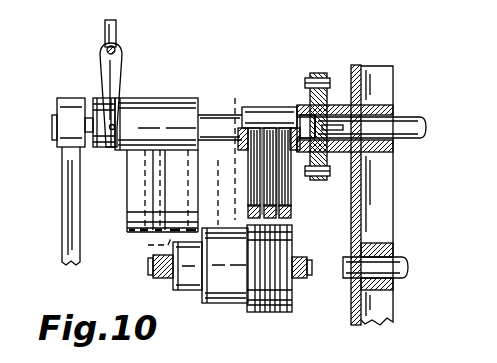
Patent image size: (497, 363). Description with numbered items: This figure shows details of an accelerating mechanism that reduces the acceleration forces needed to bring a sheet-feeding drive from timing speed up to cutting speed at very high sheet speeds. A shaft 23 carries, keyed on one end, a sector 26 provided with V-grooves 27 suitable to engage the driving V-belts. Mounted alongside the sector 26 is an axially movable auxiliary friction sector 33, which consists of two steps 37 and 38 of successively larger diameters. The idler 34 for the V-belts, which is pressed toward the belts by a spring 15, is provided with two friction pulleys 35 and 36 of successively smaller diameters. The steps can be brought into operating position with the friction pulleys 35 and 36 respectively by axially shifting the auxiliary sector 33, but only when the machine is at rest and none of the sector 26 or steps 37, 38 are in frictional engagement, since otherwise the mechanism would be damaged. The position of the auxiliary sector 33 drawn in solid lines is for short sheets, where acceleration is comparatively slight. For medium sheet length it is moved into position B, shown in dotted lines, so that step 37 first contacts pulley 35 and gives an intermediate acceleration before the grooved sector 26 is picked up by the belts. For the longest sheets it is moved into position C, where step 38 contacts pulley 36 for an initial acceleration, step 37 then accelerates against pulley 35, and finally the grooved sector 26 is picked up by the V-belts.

The spring 15 is at (292, 212).
The shaft 23 is at (403, 122).
The sector 26 is at (260, 110).
The V-grooves 27 is at (290, 189).
The auxiliary friction sector 33 is at (155, 105).
The idler 34 is at (293, 312).
The friction pulley 35 is at (228, 303).
The friction pulley 36 is at (185, 287).
The step 37 is at (182, 202).
The step 38 is at (143, 198).
The position B is at (218, 226).
The position C is at (228, 158).